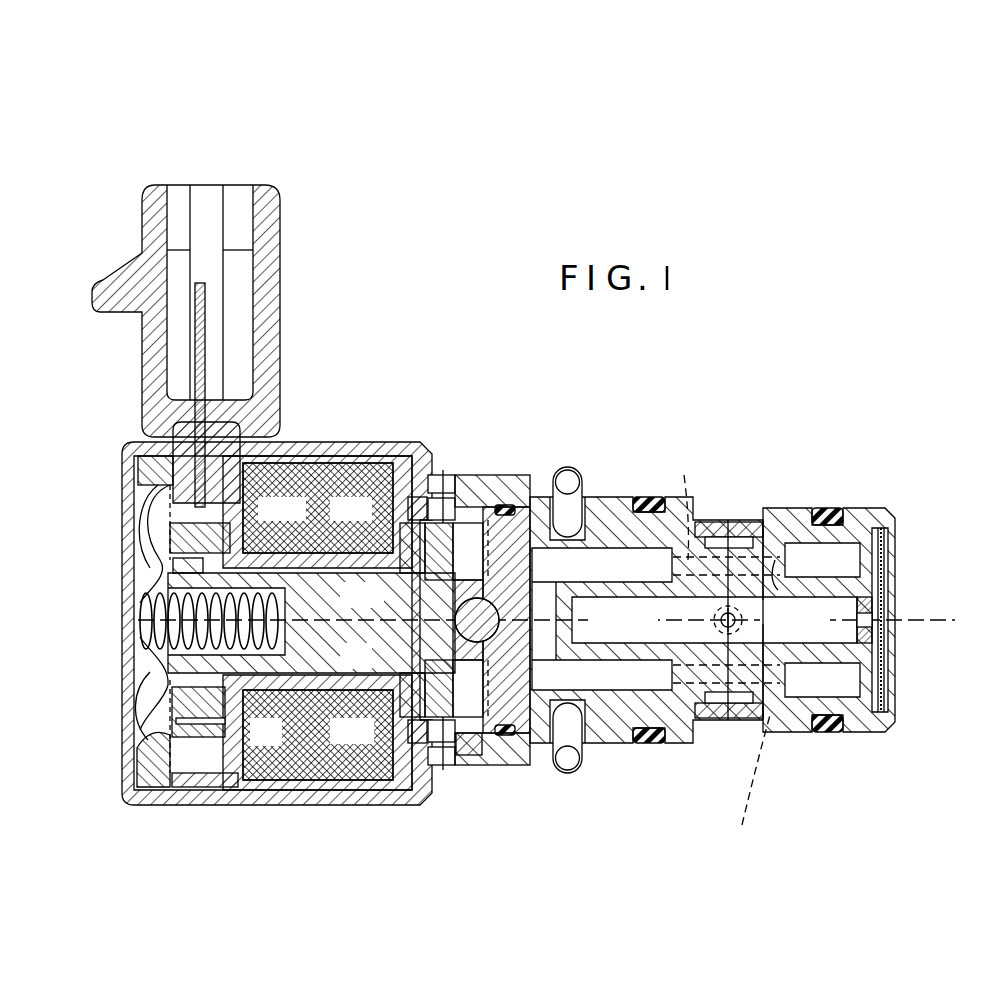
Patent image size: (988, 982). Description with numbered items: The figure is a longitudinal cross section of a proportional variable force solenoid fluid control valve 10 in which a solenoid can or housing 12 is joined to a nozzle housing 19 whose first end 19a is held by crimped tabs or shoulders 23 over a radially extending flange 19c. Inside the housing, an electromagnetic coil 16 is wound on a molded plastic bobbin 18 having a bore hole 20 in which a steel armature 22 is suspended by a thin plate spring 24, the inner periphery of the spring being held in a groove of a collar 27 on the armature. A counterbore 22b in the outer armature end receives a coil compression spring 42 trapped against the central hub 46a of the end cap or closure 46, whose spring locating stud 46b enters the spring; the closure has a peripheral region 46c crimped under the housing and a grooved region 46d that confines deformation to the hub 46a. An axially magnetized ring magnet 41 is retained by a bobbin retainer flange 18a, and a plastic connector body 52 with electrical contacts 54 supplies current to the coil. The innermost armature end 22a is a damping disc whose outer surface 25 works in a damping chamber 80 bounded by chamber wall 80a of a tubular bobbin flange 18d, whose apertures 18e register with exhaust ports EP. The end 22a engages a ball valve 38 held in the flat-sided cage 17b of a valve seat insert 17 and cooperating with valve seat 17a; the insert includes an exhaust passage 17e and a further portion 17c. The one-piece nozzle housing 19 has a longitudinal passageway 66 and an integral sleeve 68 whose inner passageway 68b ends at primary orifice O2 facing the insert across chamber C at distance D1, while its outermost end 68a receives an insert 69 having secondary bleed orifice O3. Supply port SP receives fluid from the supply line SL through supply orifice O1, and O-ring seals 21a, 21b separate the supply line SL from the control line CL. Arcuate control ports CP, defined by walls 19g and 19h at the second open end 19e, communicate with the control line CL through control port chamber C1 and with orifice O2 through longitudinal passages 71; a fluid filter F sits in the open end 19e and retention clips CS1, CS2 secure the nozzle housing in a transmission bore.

The proportional variable force solenoid fluid control valve 10 is at (486, 403).
The solenoid can or housing 12 is at (176, 815).
The electromagnetic coil 16 is at (280, 745).
The valve seat insert 17 is at (545, 457).
The valve seat 17a is at (540, 676).
The flat-sided cage 17b is at (470, 588).
The valve body shoulder 17c is at (599, 752).
The fluid exhaust passage 17e is at (533, 578).
The bobbin 18 is at (240, 792).
The bobbin retainer flange 18a is at (170, 510).
The tubular bobbin flange 18d is at (462, 768).
The fluid exhaust apertures 18e is at (385, 443).
The nozzle housing 19 is at (606, 750).
The first end of nozzle housing 19a is at (517, 760).
The radially extending flange 19c is at (420, 768).
The second open end 19e is at (893, 518).
The walls of sleeve 19g is at (850, 700).
The wall of nozzle housing 19h is at (790, 735).
The bore hole 20 is at (338, 577).
The O-ring seal 21a is at (655, 745).
The O-ring seal 21b is at (832, 735).
The armature 22 is at (372, 668).
The innermost armature end 22a is at (478, 452).
The counterbore 22b is at (245, 592).
The tabs or shoulders 23 is at (432, 445).
The plate spring 24 is at (167, 687).
The cylindrical outer surface 25 is at (470, 745).
The collar 27 is at (163, 588).
The ball valve 38 is at (492, 602).
The ring magnet 41 is at (267, 463).
The coil compression spring 42 is at (140, 582).
The end cap or closure 46 is at (137, 520).
The central hub 46a is at (133, 617).
The spring locating stud 46b is at (143, 633).
The peripheral region 46c is at (137, 773).
The grooved region 46d is at (150, 722).
The connector body 52 is at (275, 290).
The electrical contacts 54 is at (196, 327).
The longitudinal passageway 66 is at (845, 547).
The fluid flow directing sleeve 68 is at (792, 585).
The outermost axial end of sleeve 68a is at (860, 540).
The inner passageway 68b is at (752, 603).
The insert 69 is at (873, 603).
The longitudinal fluid passages 71 is at (719, 652).
The damping chamber 80 is at (481, 520).
The chamber wall 80a is at (400, 717).
The exhaust ports EP is at (452, 450).
The control ports CP is at (868, 560).
The control line or chamber CL is at (950, 634).
The supply line or chamber SL is at (745, 502).
The fluid filter F is at (888, 583).
The control port chamber C1 is at (893, 693).
The chamber C is at (625, 748).
The distance D1 is at (541, 619).
The first supply orifice O1 is at (744, 616).
The primary orifice O2 is at (562, 618).
The secondary bleed orifice O3 is at (853, 618).
The supply port SP is at (760, 606).
The retention clip CS1 is at (527, 545).
The retention clip CS2 is at (748, 520).